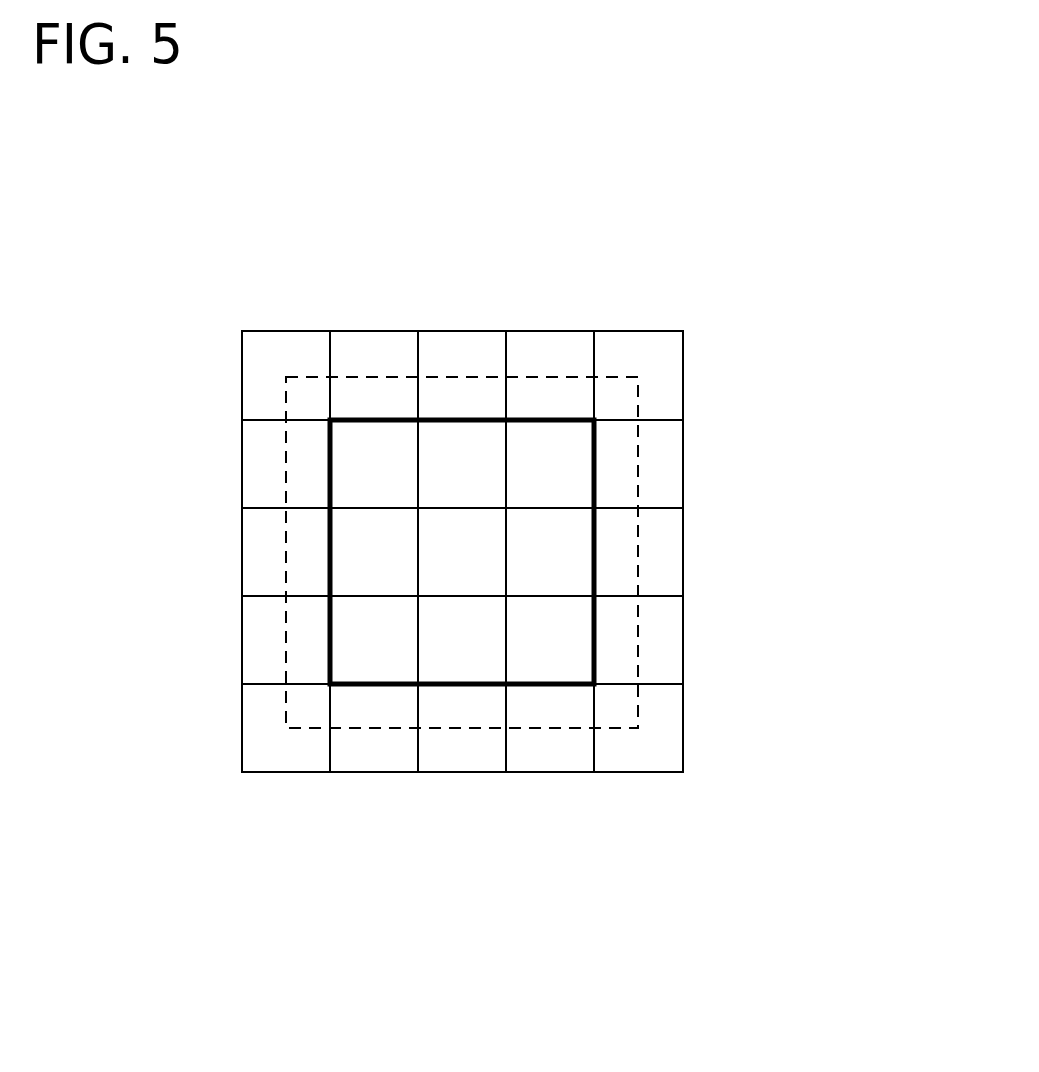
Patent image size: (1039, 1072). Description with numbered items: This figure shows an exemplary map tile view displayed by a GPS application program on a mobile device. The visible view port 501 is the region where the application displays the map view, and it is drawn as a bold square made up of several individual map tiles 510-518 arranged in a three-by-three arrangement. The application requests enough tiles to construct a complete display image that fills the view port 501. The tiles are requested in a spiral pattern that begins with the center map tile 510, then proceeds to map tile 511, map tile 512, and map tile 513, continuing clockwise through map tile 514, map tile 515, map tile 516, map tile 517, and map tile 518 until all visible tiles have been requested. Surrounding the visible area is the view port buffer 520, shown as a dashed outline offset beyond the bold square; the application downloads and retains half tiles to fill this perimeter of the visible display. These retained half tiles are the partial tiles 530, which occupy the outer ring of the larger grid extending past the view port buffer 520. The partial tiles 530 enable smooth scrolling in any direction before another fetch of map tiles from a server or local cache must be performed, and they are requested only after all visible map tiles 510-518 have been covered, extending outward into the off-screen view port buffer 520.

The visible view port 501 is at (334, 502).
The map tile 510 is at (419, 714).
The map tile 511 is at (430, 608).
The map tile 512 is at (248, 706).
The map tile 513 is at (345, 553).
The map tile 514 is at (323, 360).
The map tile 515 is at (465, 437).
The map tile 516 is at (596, 373).
The map tile 517 is at (688, 536).
The map tile 518 is at (600, 738).
The view port buffer 520 is at (552, 552).
The partial tile 530 is at (567, 551).